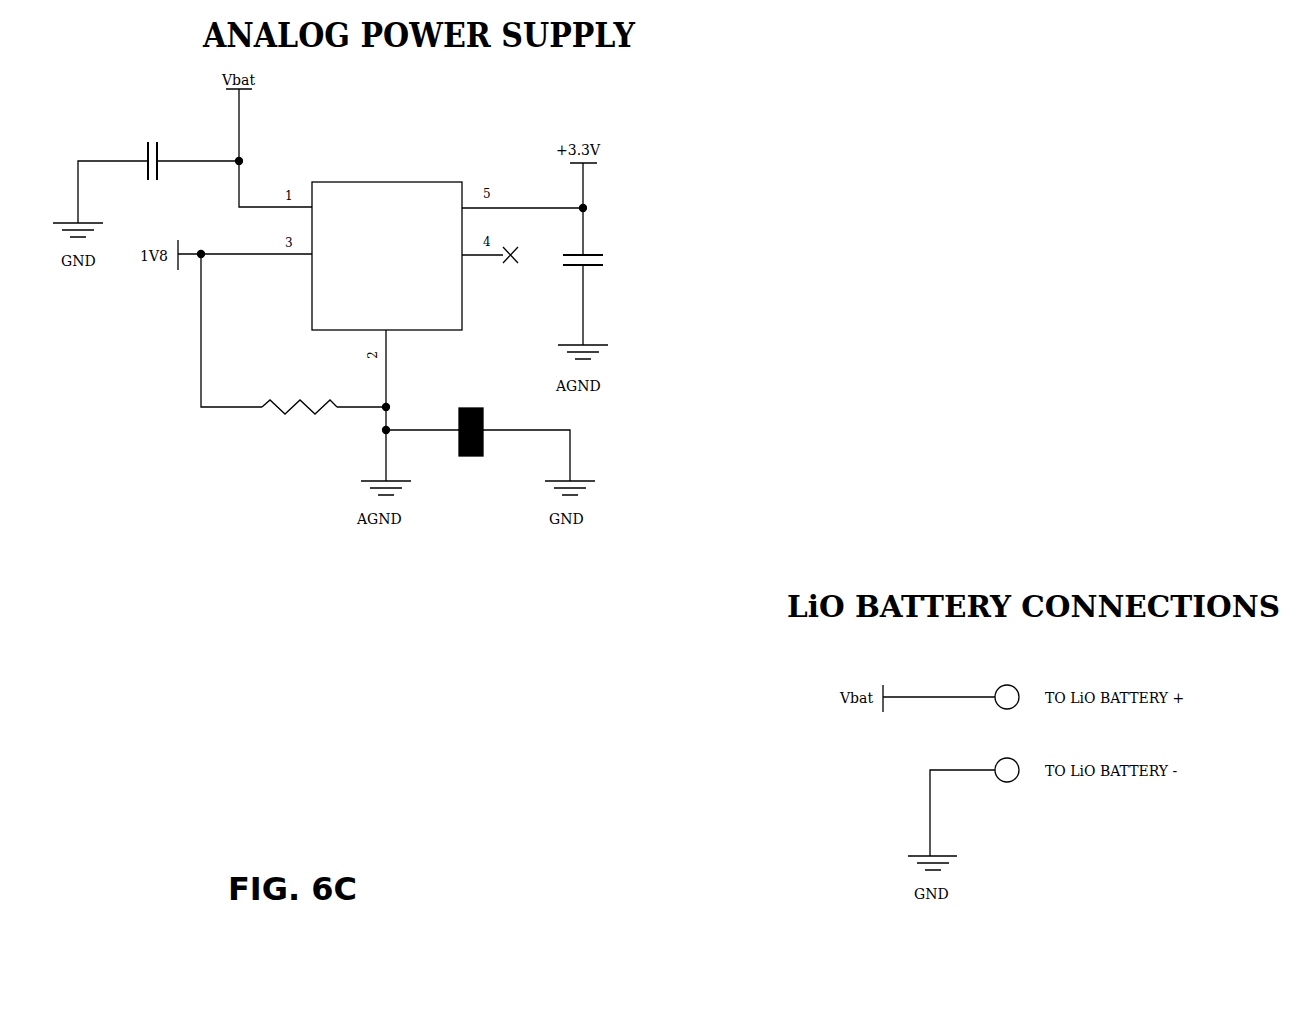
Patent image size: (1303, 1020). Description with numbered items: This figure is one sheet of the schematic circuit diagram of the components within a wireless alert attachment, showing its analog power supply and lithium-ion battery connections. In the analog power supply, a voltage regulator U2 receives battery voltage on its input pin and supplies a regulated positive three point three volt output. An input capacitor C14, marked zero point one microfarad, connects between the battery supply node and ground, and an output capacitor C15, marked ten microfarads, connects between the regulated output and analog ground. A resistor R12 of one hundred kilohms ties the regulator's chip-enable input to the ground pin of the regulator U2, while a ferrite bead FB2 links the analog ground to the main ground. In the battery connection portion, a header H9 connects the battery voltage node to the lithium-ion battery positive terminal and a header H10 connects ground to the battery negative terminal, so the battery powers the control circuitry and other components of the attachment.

The 0.1uF capacitor C14 is at (161, 161).
The XC6209F332MRN voltage regulator U2 is at (383, 233).
The 100K resistor R12 is at (299, 410).
The 10uF capacitor C15 is at (602, 275).
The ferrite bead FB2 is at (469, 434).
The LiO battery + connection header H9 is at (1002, 691).
The LiO battery - connection header H10 is at (1008, 764).